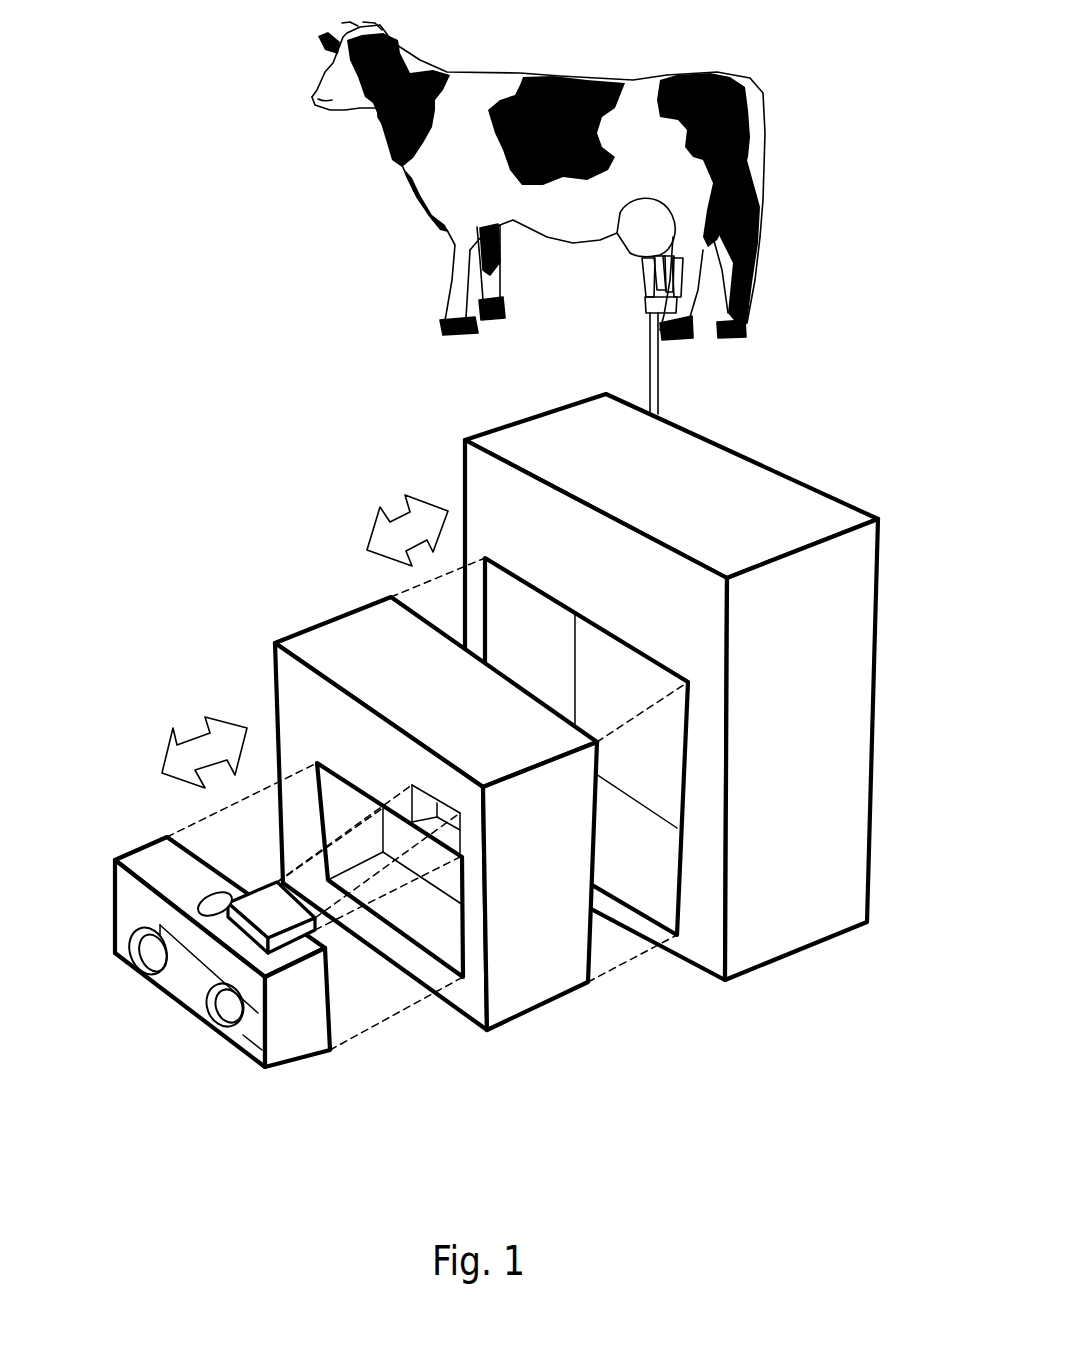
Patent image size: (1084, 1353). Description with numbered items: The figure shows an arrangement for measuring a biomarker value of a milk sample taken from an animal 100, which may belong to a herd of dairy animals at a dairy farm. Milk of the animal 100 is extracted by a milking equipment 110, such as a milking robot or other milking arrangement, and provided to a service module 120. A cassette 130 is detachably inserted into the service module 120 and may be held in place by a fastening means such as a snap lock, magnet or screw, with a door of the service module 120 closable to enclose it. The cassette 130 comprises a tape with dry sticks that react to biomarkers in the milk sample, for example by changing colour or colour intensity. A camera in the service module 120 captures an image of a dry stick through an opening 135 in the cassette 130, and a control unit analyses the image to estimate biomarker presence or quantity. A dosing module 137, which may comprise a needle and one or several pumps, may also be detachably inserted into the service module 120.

The animal 100 is at (740, 82).
The milking equipment 110 is at (852, 580).
The service module 120 is at (537, 975).
The cassette 130 is at (282, 1042).
The opening 135 is at (213, 900).
The dosing module 137 is at (280, 915).